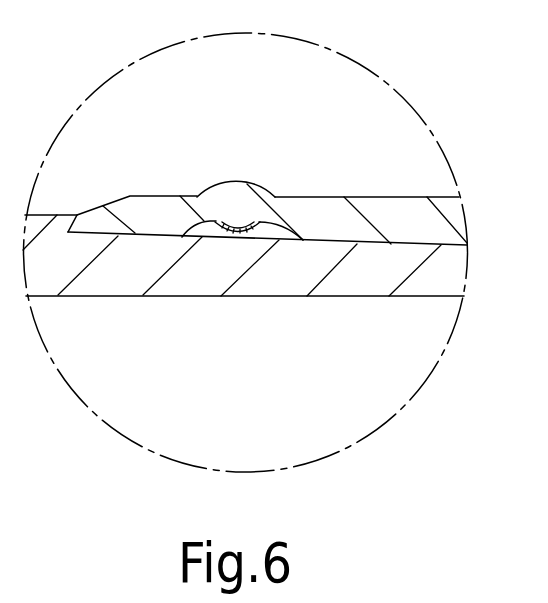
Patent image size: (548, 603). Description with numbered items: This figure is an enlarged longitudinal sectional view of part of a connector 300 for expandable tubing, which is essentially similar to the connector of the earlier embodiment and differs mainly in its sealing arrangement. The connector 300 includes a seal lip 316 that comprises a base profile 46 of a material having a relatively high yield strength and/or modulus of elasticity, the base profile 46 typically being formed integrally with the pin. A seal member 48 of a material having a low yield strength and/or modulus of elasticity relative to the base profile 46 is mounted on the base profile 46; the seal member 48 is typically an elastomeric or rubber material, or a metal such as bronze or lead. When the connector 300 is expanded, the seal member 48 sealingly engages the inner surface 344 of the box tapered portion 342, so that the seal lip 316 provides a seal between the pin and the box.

The connector 300 is at (435, 97).
The box tapered portion 342 is at (73, 313).
The inner surface 344 is at (301, 244).
The base profile 46 is at (243, 222).
The seal lip 316 is at (213, 233).
The seal member 48 is at (237, 290).